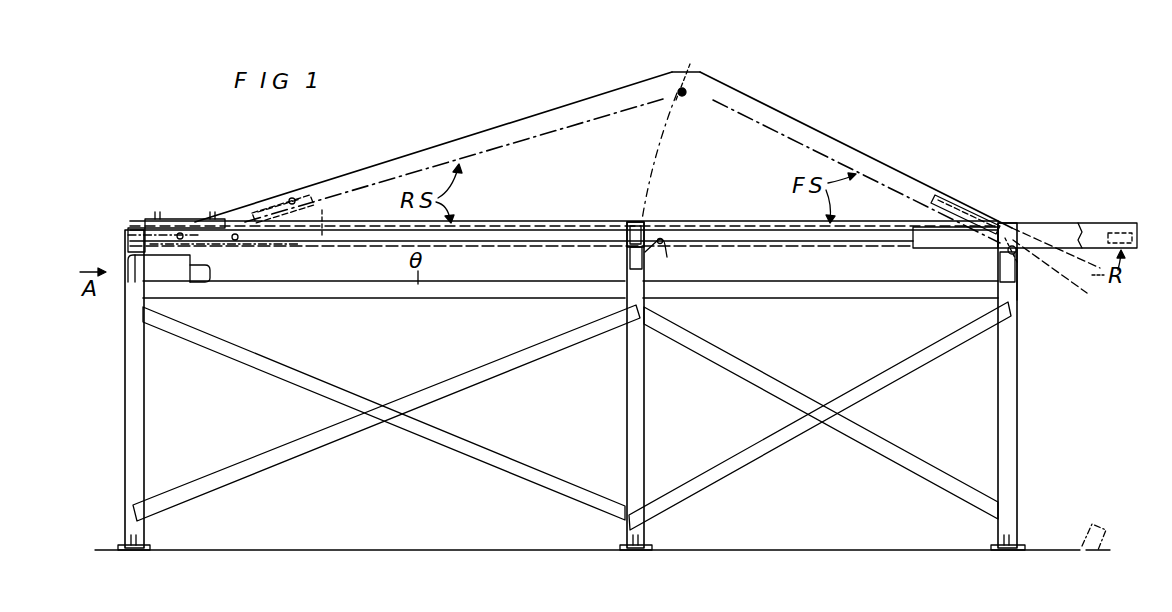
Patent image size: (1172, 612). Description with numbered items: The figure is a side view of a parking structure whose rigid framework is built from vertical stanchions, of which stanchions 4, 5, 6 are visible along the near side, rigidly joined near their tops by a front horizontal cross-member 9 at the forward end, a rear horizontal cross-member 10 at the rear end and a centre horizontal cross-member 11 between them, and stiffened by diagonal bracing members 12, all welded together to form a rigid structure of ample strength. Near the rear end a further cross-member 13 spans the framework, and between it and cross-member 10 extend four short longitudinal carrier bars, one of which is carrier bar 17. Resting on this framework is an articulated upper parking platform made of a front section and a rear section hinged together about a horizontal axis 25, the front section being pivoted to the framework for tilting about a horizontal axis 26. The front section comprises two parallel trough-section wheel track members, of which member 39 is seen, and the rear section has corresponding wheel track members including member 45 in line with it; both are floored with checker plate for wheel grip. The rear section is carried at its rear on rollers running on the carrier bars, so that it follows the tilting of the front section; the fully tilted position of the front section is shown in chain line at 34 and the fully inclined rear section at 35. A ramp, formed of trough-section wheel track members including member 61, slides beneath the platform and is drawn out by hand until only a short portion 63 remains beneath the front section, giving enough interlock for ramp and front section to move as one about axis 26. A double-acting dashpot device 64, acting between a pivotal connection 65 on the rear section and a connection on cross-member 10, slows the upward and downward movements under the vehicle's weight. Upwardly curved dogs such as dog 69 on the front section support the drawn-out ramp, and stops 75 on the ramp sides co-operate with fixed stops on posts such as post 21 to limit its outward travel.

The vertical stanchion 4 is at (140, 364).
The vertical stanchion 5 is at (638, 427).
The vertical stanchion 6 is at (1010, 355).
The front horizontal cross-member 9 is at (1017, 290).
The rear horizontal cross-member 10 is at (150, 250).
The centre horizontal cross-member 11 is at (630, 258).
The bracing member 12 is at (124, 397).
The further cross-member 13 is at (200, 276).
The carrier bar 17 is at (200, 262).
The post 21 is at (998, 262).
The horizontal axis 25 is at (684, 98).
The horizontal axis 26 is at (1014, 247).
The fully tilted position of the front section 34 is at (818, 130).
The fully inclined position of the rear section 35 is at (380, 163).
The trough-section member 39 is at (843, 238).
The trough-section wheel track member 45 is at (533, 238).
The trough section wheel track member 61 is at (1100, 238).
The short portion of the ramp 63 is at (955, 238).
The double-acting dashpot device 64 is at (170, 222).
The pivotal connection 65 is at (668, 255).
The upwardly curved dog 69 is at (918, 228).
The stop 75 is at (322, 210).